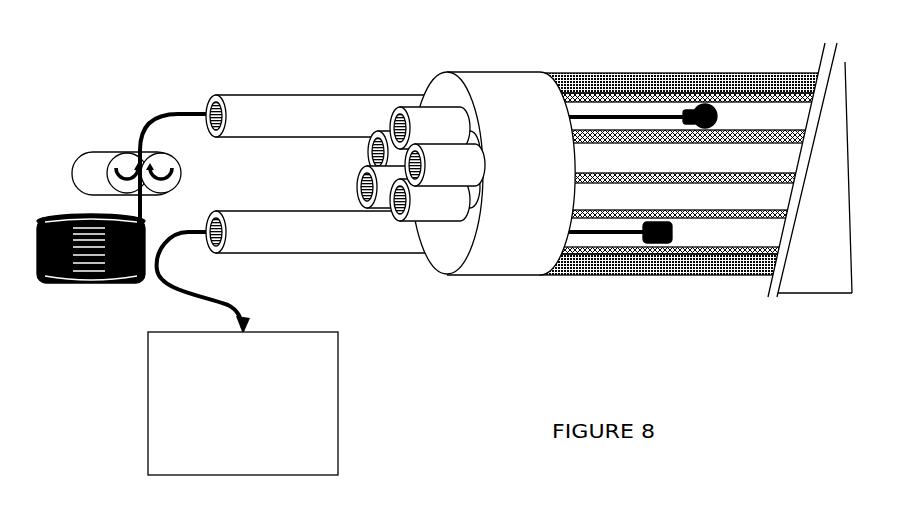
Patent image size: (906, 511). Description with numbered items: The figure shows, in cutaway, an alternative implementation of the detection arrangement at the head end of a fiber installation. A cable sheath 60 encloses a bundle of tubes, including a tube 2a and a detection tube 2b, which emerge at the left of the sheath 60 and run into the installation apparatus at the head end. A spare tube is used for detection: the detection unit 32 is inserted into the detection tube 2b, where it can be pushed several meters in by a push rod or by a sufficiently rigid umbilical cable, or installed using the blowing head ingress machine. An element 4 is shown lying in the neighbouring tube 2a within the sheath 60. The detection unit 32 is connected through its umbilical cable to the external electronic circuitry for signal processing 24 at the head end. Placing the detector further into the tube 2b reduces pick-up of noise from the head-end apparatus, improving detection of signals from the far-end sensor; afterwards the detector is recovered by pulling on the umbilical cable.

The tube 2a is at (263, 92).
The detection tube 2b is at (250, 210).
The sensor element 4 is at (602, 113).
The external electronic circuitry for signal processing 24 is at (243, 403).
The detection unit 32 is at (653, 243).
The cable sheath / cylinder 60 is at (462, 70).